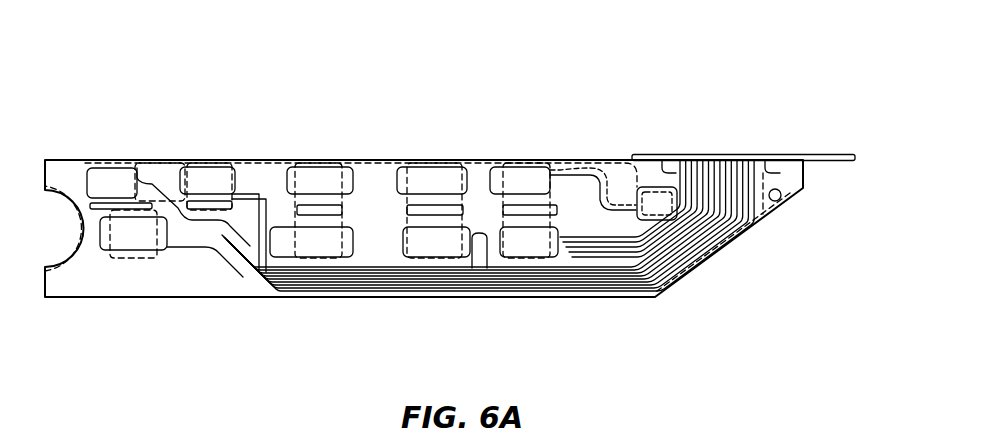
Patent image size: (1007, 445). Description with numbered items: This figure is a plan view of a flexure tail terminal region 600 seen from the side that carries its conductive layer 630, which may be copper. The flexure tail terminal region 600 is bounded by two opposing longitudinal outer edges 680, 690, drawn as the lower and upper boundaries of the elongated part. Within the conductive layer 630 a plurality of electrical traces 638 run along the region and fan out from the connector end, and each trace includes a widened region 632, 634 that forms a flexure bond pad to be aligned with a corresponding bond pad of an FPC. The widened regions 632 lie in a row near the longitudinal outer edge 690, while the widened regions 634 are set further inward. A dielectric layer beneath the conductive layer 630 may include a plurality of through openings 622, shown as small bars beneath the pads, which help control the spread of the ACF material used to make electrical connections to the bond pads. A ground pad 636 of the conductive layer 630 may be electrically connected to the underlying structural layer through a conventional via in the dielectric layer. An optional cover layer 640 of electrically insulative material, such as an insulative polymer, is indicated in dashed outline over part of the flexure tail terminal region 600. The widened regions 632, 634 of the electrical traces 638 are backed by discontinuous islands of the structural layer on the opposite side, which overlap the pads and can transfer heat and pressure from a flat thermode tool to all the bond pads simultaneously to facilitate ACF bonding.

The flexure tail terminal region 600 is at (405, 80).
The through openings 622 is at (408, 208).
The conductive layer 630 is at (350, 297).
The widened regions 632 is at (113, 182).
The widened regions 634 is at (131, 230).
The ground pad 636 is at (655, 205).
The electrical traces 638 is at (767, 147).
The cover layer 640 is at (583, 178).
The longitudinal outer edge 680 is at (213, 297).
The longitudinal outer edge 690 is at (273, 162).